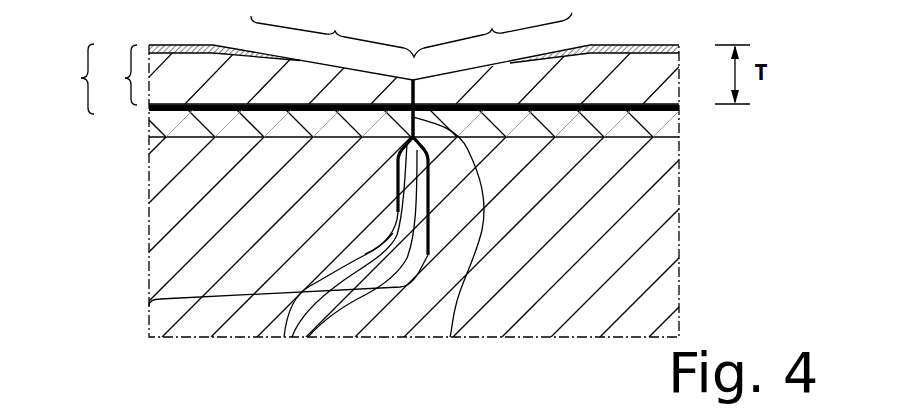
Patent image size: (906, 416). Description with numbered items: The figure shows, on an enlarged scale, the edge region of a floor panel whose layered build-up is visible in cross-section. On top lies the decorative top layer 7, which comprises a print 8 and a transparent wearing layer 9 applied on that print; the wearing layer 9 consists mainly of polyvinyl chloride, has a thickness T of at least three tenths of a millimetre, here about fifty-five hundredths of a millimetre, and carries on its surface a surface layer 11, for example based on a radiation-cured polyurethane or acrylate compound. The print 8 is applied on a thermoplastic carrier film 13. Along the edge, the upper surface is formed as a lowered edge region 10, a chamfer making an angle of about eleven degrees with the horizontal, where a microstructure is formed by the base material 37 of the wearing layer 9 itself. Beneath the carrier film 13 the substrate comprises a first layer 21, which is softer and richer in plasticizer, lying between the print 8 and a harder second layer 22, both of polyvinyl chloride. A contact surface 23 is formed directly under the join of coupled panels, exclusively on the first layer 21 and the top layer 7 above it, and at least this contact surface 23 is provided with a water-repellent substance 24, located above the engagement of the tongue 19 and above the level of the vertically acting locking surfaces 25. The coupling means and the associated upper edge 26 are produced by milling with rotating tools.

The decorative top layer 7 is at (81, 78).
The print 8 is at (203, 105).
The wearing layer 9 is at (125, 78).
The lowered edge region 10 is at (411, 28).
The surface layer 11 is at (193, 46).
The thermoplastic carrier film 13 is at (152, 123).
The tongue 19 is at (492, 328).
The first layer 21 is at (650, 122).
The second layer 22 is at (222, 240).
The contact surface 23 is at (450, 337).
The water-repellent substance 24 is at (284, 337).
The vertically acting locking surfaces 25 is at (243, 297).
The upper edge 26 is at (413, 80).
The base material 37 is at (235, 83).